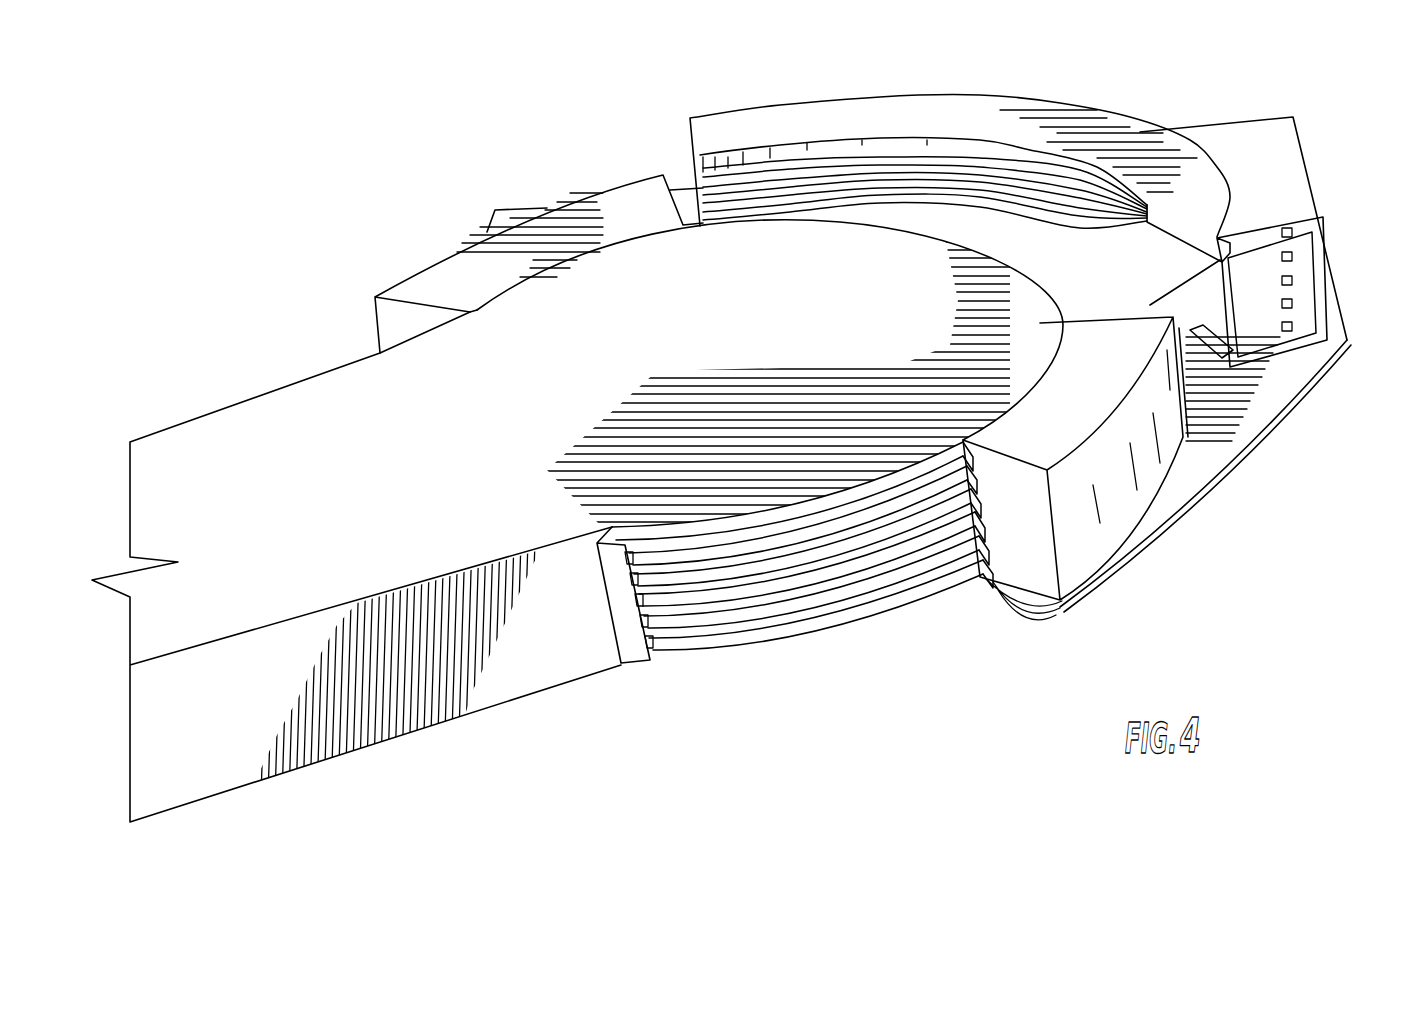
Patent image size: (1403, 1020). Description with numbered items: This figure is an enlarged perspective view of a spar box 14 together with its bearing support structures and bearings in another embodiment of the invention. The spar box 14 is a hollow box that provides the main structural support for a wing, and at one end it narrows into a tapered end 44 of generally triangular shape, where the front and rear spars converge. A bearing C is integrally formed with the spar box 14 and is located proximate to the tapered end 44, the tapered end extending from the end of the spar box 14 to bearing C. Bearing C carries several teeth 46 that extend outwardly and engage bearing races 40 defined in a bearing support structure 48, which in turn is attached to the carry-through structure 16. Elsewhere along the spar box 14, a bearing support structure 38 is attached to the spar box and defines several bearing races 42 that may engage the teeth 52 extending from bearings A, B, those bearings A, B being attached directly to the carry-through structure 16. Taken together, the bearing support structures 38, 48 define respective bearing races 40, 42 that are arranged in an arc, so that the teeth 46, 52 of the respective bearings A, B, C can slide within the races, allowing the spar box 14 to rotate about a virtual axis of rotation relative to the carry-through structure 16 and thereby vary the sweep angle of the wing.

The spar box 14 is at (468, 657).
The carry-through structure 16 is at (1201, 450).
The bearing support structure 38 is at (617, 614).
The bearing races 40 is at (1299, 318).
The bearing races 42 is at (802, 621).
The tapered end 44 is at (1100, 268).
The teeth 46 is at (1268, 357).
The bearing support structure 48 is at (1243, 198).
The teeth 52 is at (976, 557).
The bearing A is at (564, 230).
The bearing B is at (1114, 508).
The bearing C is at (1249, 326).